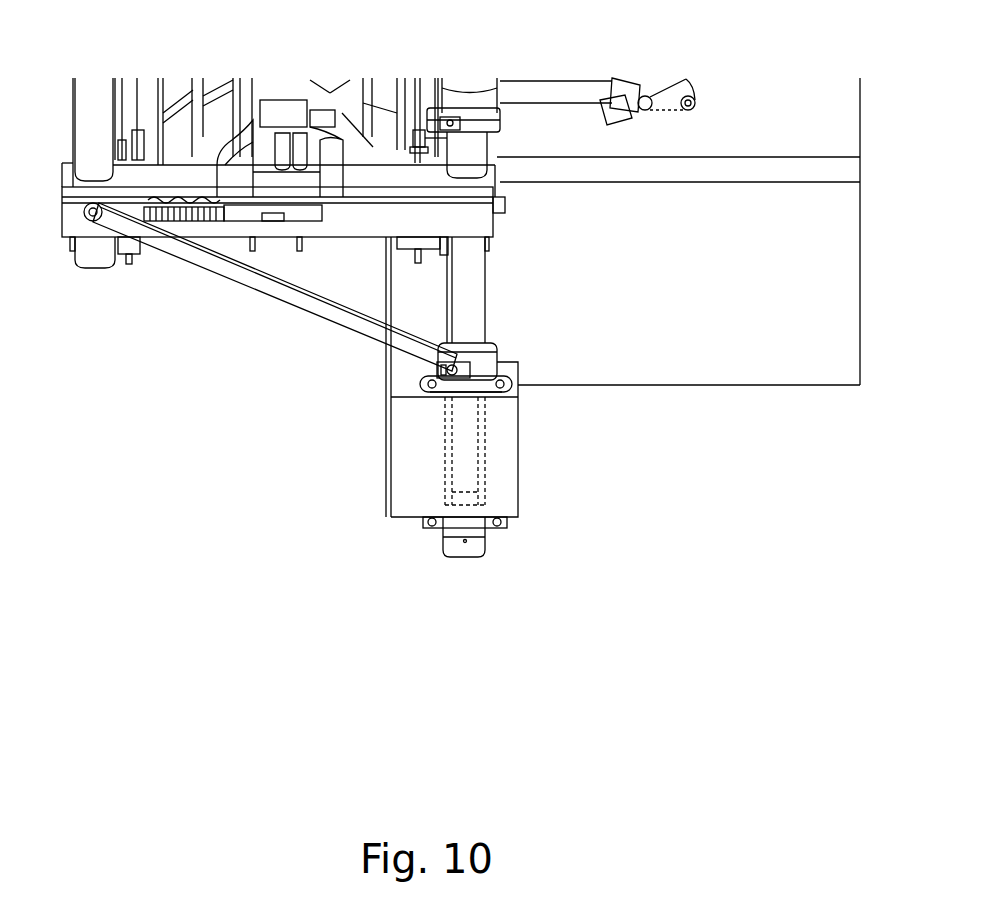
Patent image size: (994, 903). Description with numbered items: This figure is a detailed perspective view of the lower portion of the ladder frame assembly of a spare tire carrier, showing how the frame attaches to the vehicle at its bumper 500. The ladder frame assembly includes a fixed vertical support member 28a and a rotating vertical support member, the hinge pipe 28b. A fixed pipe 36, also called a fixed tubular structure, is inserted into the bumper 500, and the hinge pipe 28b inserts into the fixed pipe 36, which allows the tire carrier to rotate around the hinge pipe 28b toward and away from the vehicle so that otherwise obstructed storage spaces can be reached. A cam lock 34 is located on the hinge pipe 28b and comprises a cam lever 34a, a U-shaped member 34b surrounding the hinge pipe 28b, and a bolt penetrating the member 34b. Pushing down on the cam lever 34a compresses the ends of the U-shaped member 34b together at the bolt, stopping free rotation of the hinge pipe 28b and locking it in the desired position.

The fixed vertical support member 28a is at (93, 138).
The hinge pipe 28b is at (485, 268).
The cam lock 34 is at (518, 125).
The cam lever 34a is at (485, 123).
The U-shaped member 34b is at (420, 160).
The fixed pipe 36 is at (485, 480).
The bumper 500 is at (402, 478).